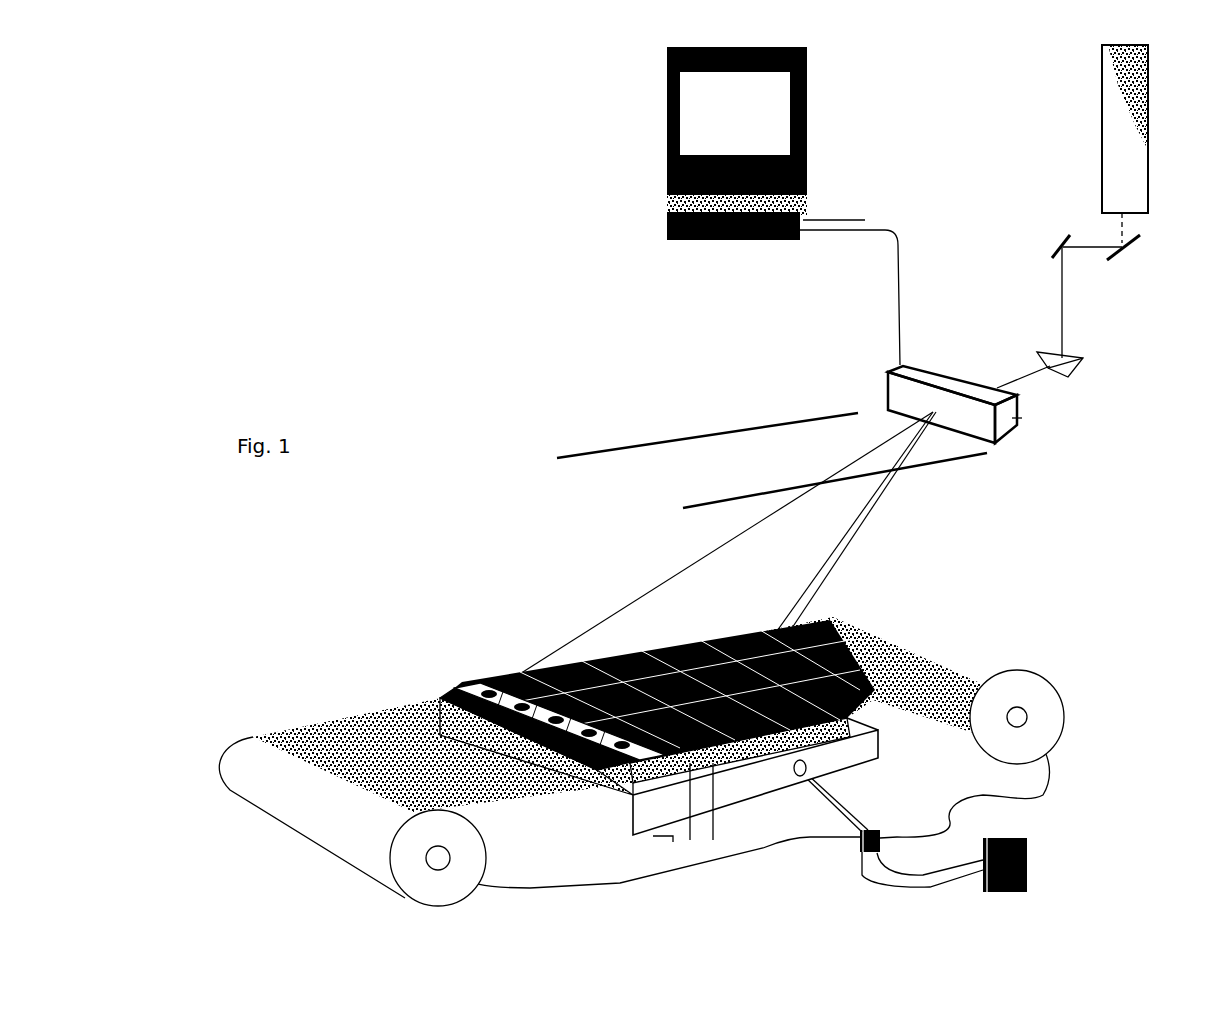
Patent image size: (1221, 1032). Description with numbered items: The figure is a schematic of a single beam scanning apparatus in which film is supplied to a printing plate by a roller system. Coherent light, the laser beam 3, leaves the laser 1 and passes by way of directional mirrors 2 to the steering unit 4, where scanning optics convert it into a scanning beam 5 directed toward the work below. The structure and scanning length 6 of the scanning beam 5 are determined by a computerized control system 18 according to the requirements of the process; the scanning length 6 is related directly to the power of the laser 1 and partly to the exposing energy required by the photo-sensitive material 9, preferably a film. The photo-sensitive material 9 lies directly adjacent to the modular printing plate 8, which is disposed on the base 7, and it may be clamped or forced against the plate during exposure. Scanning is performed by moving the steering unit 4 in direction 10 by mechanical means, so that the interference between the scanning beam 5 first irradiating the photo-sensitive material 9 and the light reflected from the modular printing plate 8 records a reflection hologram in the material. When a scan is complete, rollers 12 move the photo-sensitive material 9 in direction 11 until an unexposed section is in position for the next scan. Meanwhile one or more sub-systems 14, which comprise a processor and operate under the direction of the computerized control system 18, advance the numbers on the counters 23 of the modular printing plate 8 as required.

The laser 1 is at (1098, 145).
The directional mirrors 2 is at (1043, 236).
The laser beam 3 is at (1095, 265).
The steering unit 4 is at (850, 367).
The scanning beam 5 is at (857, 563).
The scanning length 6 is at (733, 833).
The base 7 is at (853, 758).
The modular printing plate 8 is at (472, 673).
The photo-sensitive material 9 is at (892, 632).
The direction 10 is at (700, 418).
The direction 11 is at (300, 708).
The rollers 12 is at (275, 835).
The sub-systems 14 is at (1125, 885).
The computerized control system 18 is at (623, 160).
The counters 23 is at (511, 677).